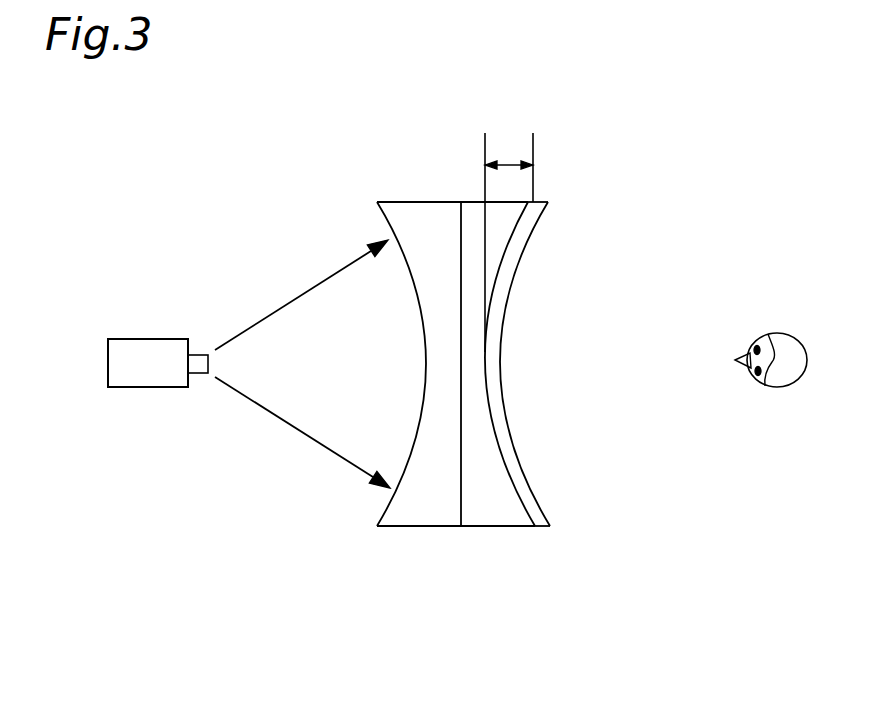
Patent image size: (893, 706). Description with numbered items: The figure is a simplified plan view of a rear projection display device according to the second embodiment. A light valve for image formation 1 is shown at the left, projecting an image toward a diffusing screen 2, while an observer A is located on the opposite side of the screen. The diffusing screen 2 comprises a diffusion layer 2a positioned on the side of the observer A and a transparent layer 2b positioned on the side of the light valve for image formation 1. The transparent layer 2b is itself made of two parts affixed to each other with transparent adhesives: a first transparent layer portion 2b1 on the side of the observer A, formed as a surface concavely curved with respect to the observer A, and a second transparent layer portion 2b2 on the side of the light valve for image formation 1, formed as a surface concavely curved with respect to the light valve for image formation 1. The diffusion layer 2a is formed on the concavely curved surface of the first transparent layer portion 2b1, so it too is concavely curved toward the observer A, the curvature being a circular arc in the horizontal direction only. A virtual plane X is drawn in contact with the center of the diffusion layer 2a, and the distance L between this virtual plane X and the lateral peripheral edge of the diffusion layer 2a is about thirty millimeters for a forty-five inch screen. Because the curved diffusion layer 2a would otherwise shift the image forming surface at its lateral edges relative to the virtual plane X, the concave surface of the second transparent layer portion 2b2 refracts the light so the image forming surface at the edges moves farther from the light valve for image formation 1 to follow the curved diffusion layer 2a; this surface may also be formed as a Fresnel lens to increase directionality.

The light valve for image formation 1 is at (142, 346).
The diffusing screen 2 is at (476, 444).
The diffusion layer 2a is at (546, 522).
The transparent layer 2b is at (456, 421).
The first transparent layer portion 2b1 is at (501, 516).
The second transparent layer portion 2b2 is at (438, 516).
The observer A is at (780, 337).
The virtual plane X is at (485, 146).
The distance L is at (509, 167).